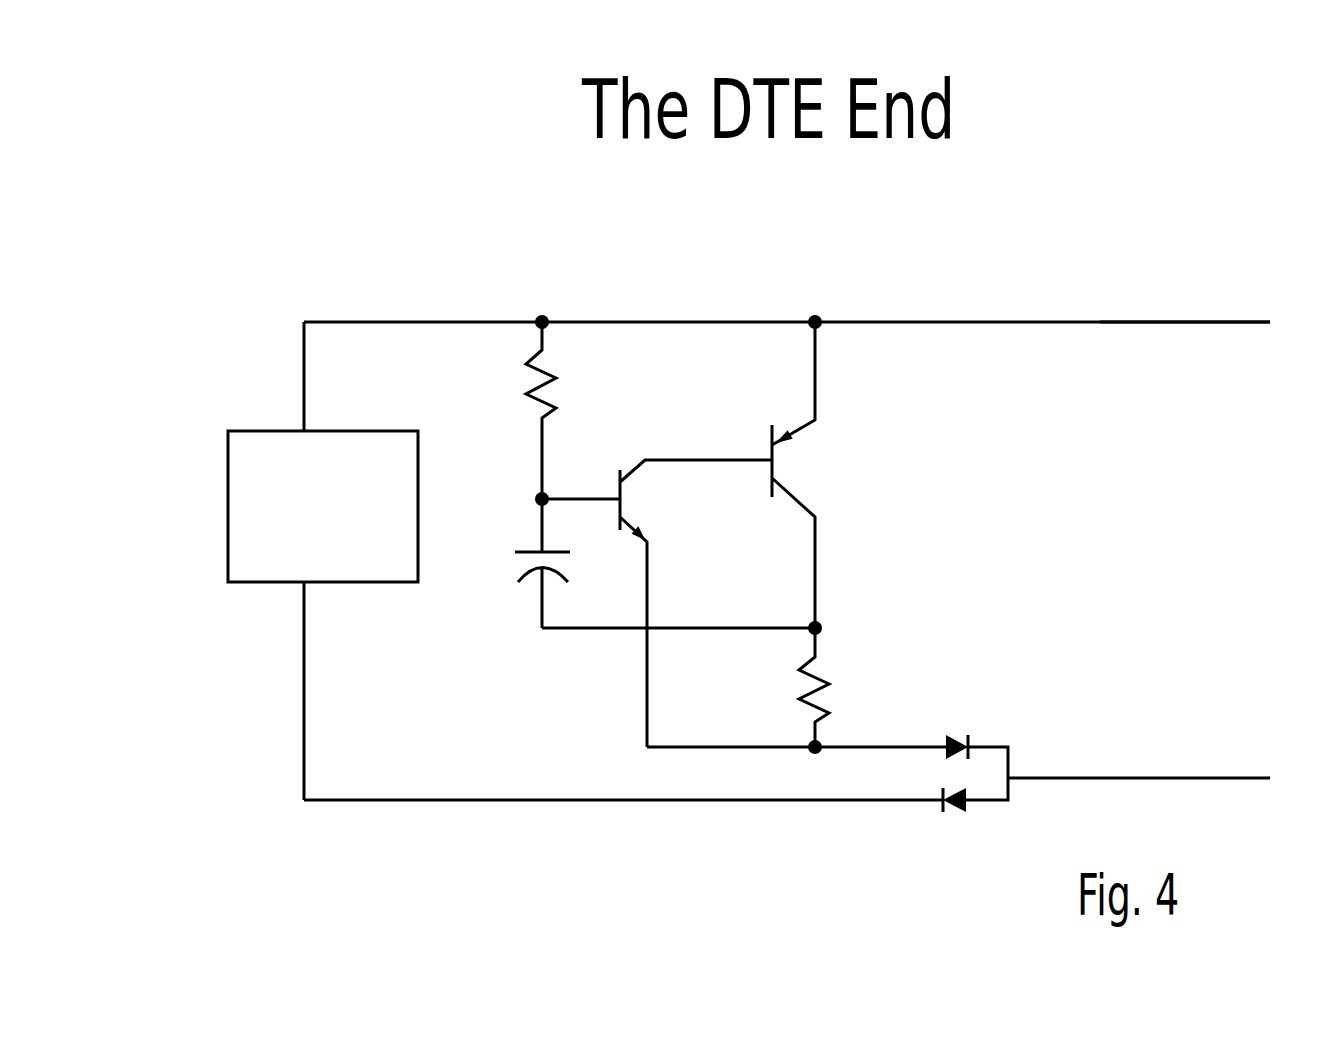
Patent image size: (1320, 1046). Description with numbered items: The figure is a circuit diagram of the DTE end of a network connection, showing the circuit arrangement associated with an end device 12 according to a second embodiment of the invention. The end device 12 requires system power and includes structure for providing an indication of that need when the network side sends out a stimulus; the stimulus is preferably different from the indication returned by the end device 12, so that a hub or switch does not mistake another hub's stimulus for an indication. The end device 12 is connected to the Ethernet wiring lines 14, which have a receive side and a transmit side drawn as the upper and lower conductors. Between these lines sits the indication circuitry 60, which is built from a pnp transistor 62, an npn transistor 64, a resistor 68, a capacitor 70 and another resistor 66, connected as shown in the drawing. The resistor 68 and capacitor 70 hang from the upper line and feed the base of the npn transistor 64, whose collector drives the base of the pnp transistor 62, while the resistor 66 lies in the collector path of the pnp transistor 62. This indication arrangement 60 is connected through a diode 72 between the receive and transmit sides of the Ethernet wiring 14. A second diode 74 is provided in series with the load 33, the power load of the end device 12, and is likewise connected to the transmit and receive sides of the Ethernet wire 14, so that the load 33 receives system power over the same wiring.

The end device 12 is at (730, 306).
The Ethernet wiring lines 14 is at (1168, 322).
The load 33 is at (240, 548).
The indication circuitry 60 is at (795, 534).
The pnp transistor 62 is at (815, 413).
The npn transistor 64 is at (633, 468).
The resistor 66 is at (822, 678).
The resistor 68 is at (548, 372).
The capacitor 70 is at (573, 570).
The diode 72 is at (972, 746).
The diode 74 is at (958, 820).